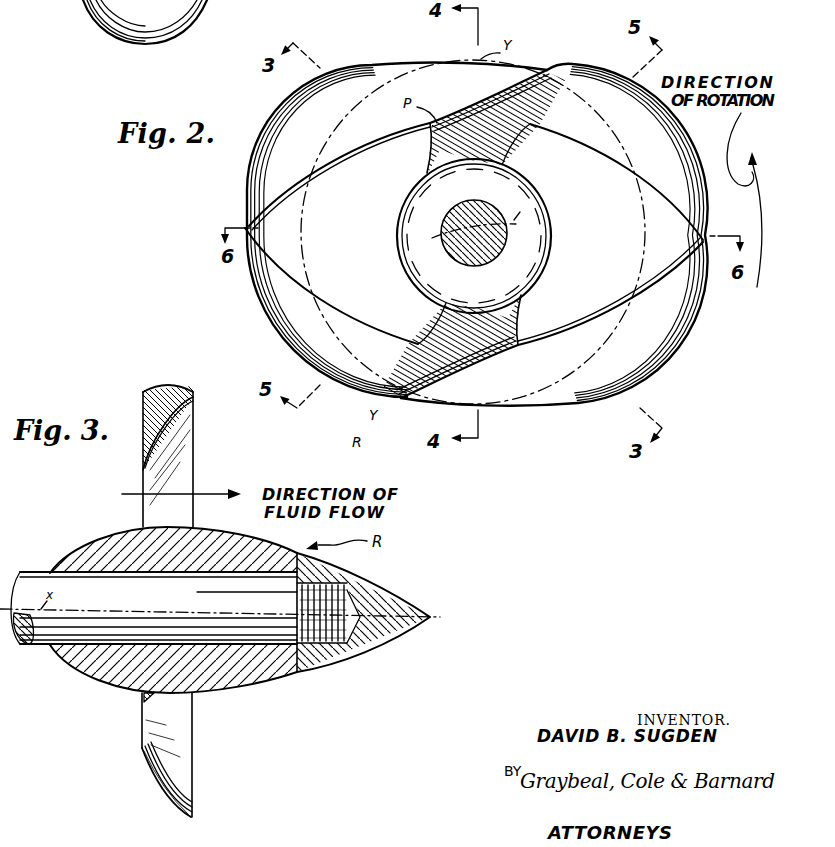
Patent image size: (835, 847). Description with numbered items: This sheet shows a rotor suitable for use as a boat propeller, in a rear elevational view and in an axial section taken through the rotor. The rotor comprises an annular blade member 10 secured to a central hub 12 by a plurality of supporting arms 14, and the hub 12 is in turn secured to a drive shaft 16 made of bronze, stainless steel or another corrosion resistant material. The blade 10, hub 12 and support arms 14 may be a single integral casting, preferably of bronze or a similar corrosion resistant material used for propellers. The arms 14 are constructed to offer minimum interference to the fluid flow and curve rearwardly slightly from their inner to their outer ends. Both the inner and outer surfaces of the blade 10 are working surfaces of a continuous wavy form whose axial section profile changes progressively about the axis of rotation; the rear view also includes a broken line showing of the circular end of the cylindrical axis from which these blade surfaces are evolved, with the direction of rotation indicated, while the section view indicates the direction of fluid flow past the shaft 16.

In FIG. 2, the annular blade member 10 is at (282, 291).
In FIG. 3, the annular blade member 10 is at (193, 430).
In FIG. 2, the central hub 12 is at (533, 252).
In FIG. 3, the central hub 12 is at (245, 683).
In FIG. 2, the supporting arms 14 is at (490, 140).
In FIG. 3, the supporting arms 14 is at (142, 700).
In FIG. 2, the drive shaft 16 is at (440, 234).